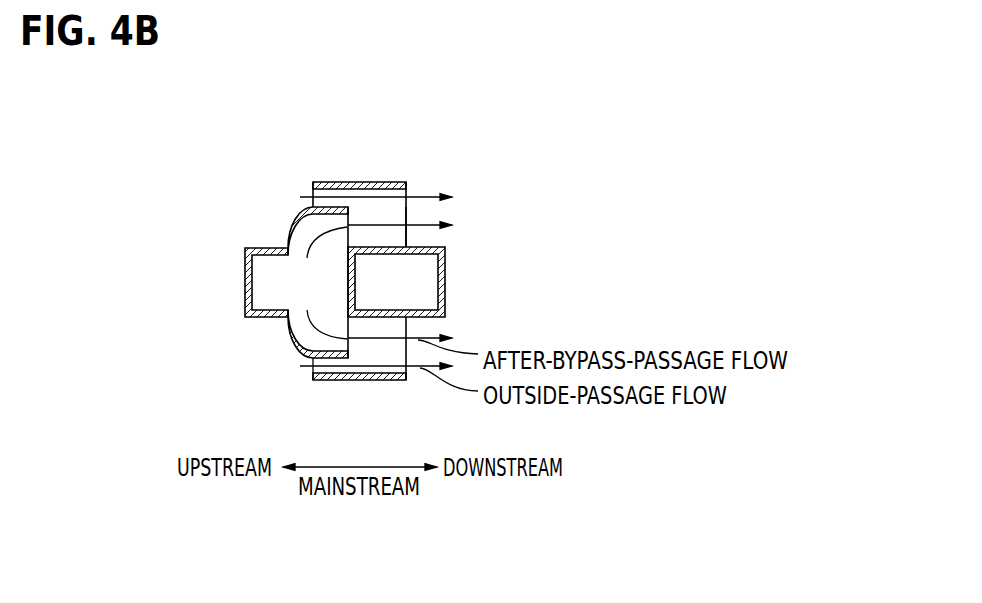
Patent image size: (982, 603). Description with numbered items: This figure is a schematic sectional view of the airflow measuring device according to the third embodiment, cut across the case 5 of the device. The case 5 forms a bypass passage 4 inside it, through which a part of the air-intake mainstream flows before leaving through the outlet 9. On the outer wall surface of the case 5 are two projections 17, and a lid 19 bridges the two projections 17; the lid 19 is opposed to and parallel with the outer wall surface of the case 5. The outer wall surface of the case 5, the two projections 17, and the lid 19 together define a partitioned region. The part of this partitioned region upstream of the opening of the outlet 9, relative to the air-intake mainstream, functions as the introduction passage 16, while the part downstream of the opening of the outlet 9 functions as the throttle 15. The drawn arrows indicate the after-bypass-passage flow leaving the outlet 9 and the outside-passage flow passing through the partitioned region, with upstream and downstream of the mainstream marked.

The case 5 is at (435, 87).
The introduction passage 16 is at (330, 193).
The lid 19 is at (338, 182).
The outlet 9 is at (348, 240).
The throttle 15 is at (387, 205).
The projections 17 is at (398, 210).
The bypass passage 4 is at (412, 287).